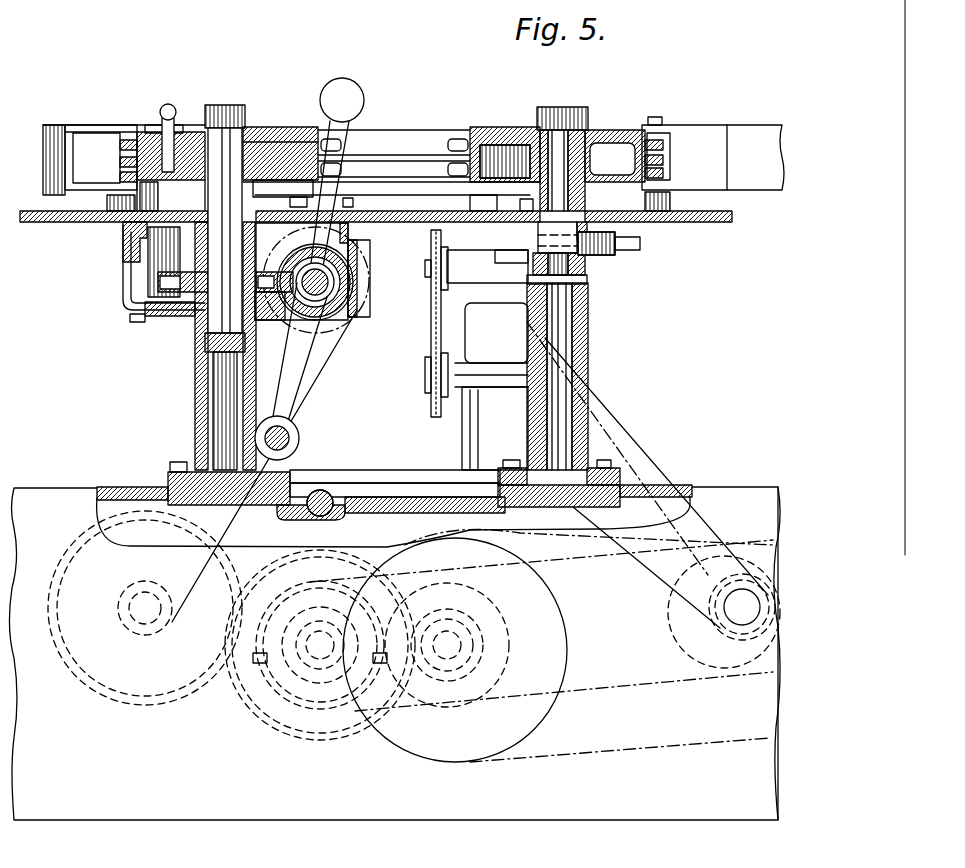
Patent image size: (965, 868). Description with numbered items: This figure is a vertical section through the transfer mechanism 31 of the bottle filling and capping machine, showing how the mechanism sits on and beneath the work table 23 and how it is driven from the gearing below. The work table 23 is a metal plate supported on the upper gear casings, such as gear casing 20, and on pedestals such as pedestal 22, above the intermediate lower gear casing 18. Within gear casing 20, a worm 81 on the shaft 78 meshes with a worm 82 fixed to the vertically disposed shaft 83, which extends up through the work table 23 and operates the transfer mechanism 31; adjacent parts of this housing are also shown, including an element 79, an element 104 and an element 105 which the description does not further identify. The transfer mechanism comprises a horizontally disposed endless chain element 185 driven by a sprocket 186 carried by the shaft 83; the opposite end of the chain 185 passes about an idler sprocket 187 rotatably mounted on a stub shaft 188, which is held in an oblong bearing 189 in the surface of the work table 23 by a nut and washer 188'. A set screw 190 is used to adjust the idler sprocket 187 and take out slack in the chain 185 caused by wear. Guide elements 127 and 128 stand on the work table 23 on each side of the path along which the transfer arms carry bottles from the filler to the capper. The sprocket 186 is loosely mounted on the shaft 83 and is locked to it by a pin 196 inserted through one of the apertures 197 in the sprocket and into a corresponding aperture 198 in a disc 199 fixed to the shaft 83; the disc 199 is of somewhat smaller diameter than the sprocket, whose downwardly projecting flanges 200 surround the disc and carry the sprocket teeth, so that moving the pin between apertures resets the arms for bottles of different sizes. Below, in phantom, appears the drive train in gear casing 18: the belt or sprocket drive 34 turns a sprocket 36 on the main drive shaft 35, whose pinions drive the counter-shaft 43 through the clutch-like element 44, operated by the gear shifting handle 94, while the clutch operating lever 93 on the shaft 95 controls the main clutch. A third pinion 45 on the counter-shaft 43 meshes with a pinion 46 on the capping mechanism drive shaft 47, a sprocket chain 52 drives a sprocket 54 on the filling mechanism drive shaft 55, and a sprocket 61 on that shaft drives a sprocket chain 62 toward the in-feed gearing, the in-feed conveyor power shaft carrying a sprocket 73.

The lower gear casing 18 is at (423, 795).
The gear casing 20 is at (160, 270).
The pedestal 22 is at (582, 325).
The work table 23 is at (400, 213).
The transfer mechanism 31 is at (400, 150).
The belt or sprocket drive 34 is at (637, 748).
The main drive shaft 35 is at (460, 647).
The sprocket 36 is at (540, 720).
The counter-shaft 43 is at (320, 657).
The clutch-like element 44 is at (293, 700).
The third pinion 45 is at (333, 733).
The pinion 46 is at (147, 702).
The capping mechanism drive shaft 47 is at (240, 337).
The sprocket chain 52 is at (700, 680).
The sprocket 54 is at (678, 630).
The filling mechanism drive shaft 55 is at (743, 622).
The sprocket 61 is at (723, 580).
The sprocket chain 62 is at (648, 457).
The sprocket 73 is at (435, 297).
The shaft 78 is at (327, 280).
The bracket 79 is at (473, 315).
The worm 81 is at (333, 295).
The worm 82 is at (168, 302).
The shaft 83 is at (223, 130).
The clutch operating lever 93 is at (343, 85).
The gear shifting handle 94 is at (322, 495).
The shaft 95 is at (287, 440).
The pin 104 is at (340, 518).
The belt run 105 is at (392, 577).
The guide element 127 is at (737, 135).
The guide element 128 is at (667, 215).
The endless chain element 185 is at (365, 140).
The sprocket 186 is at (260, 140).
The idler sprocket 187 is at (610, 137).
The stub shaft 188 is at (580, 161).
The nut and washer 188' is at (603, 272).
The oblong bearing 189 is at (590, 215).
The set screw 190 is at (587, 237).
The pin 196 is at (165, 105).
The apertures 197 is at (152, 123).
The apertures 198 is at (122, 217).
The disc 199 is at (185, 157).
The flanges 200 is at (133, 118).